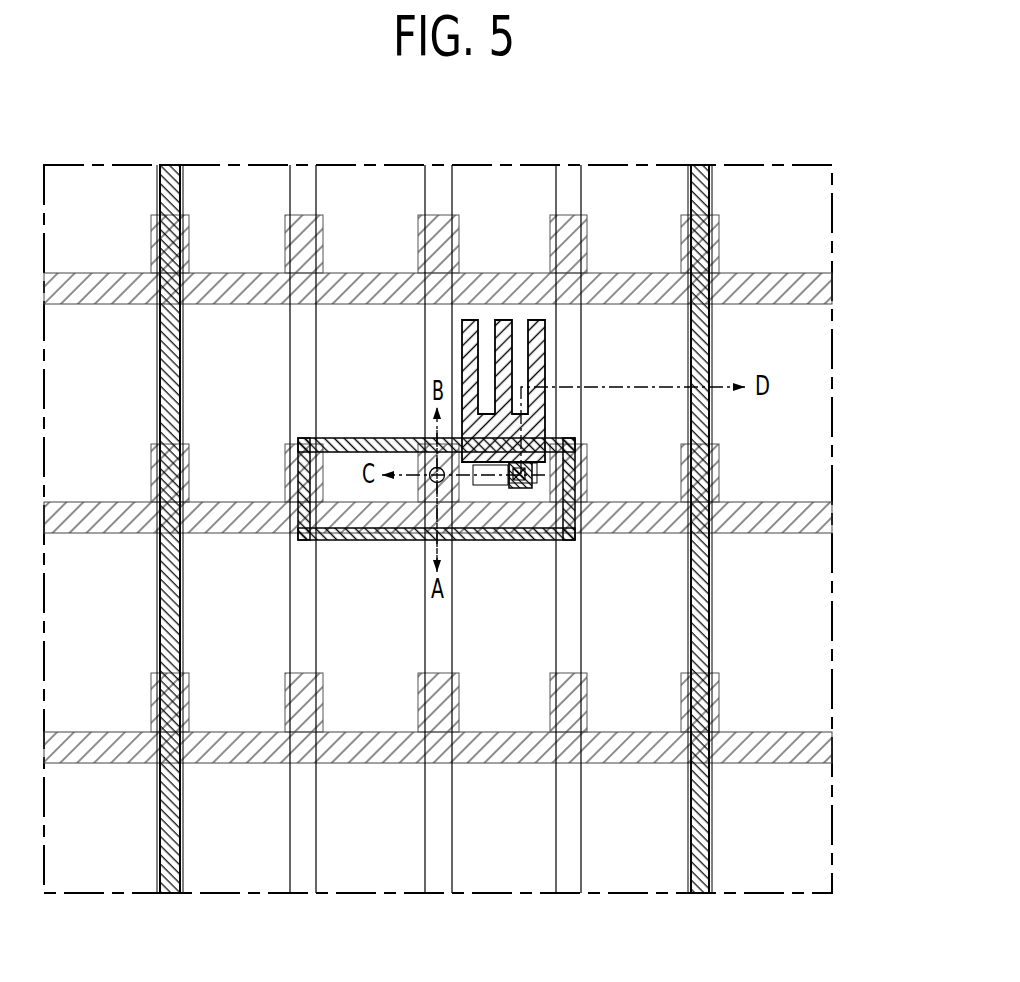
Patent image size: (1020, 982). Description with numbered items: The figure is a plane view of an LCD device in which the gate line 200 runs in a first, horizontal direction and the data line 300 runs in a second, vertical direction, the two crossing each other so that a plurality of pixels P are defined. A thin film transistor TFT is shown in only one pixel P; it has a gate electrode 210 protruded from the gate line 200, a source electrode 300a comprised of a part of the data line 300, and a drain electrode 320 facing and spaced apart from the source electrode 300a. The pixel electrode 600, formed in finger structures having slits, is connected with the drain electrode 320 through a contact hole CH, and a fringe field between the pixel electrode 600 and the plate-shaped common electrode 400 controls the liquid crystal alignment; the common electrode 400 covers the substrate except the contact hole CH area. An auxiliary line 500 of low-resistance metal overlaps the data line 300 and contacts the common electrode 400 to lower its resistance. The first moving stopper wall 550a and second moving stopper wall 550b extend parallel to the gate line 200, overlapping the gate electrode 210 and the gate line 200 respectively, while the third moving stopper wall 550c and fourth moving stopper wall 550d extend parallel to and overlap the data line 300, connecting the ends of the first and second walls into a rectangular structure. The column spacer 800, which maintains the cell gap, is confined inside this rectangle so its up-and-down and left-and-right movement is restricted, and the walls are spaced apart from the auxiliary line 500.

The gate line 200 is at (805, 290).
The gate electrode 210 is at (722, 235).
The data line 300 is at (290, 850).
The source electrode 300a is at (421, 482).
The drain electrode 320 is at (490, 487).
The common electrode 400 is at (798, 165).
The auxiliary line 500 is at (160, 850).
The first moving stopper wall 550a is at (352, 438).
The second moving stopper wall 550b is at (356, 540).
The third moving stopper wall 550c is at (300, 473).
The fourth moving stopper wall 550d is at (537, 482).
The pixel electrode 600 is at (470, 320).
The column spacer 800 is at (428, 438).
The pixel P is at (197, 196).
The contact hole CH is at (527, 473).
The thin film transistor TFT is at (537, 493).